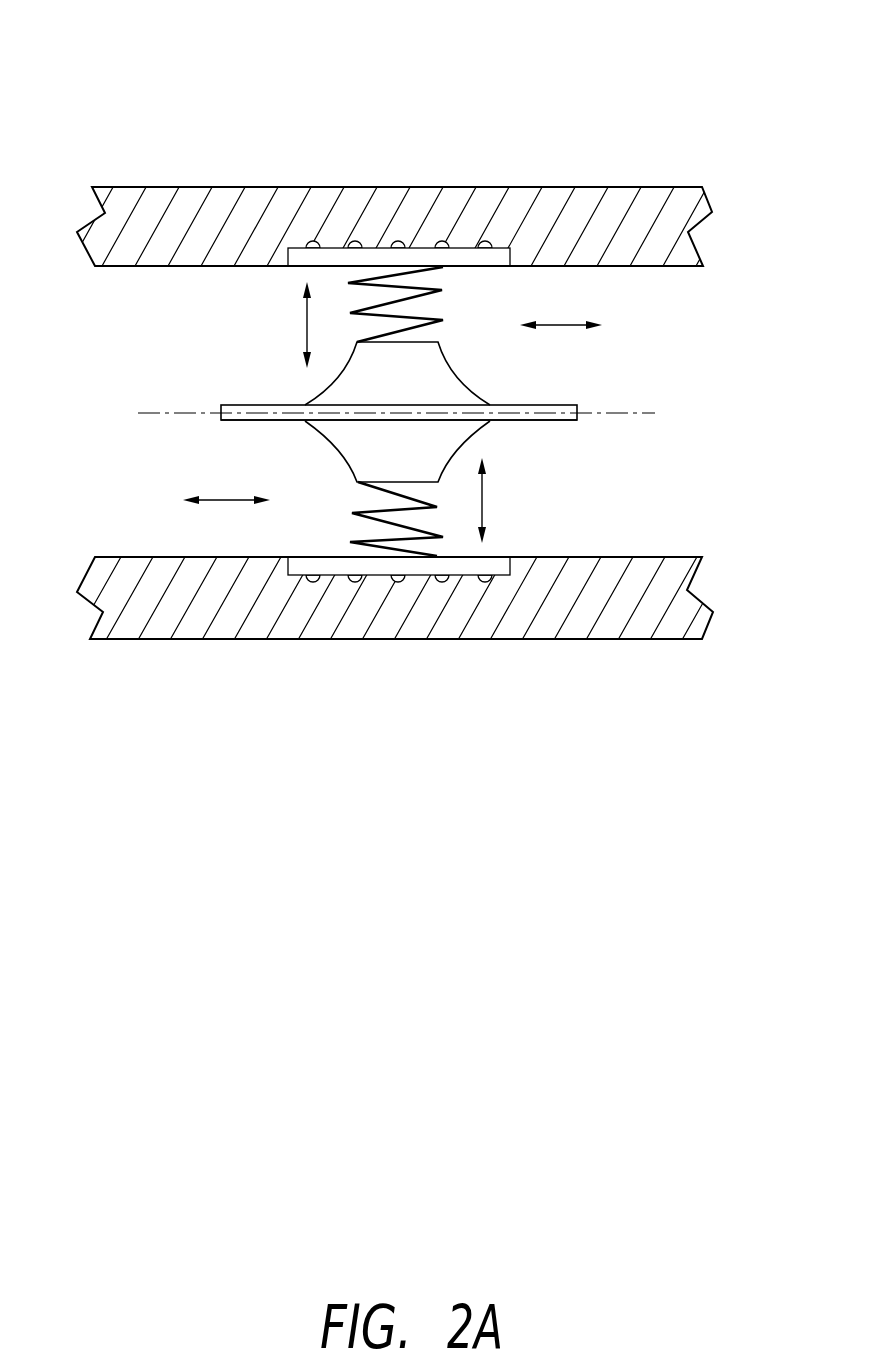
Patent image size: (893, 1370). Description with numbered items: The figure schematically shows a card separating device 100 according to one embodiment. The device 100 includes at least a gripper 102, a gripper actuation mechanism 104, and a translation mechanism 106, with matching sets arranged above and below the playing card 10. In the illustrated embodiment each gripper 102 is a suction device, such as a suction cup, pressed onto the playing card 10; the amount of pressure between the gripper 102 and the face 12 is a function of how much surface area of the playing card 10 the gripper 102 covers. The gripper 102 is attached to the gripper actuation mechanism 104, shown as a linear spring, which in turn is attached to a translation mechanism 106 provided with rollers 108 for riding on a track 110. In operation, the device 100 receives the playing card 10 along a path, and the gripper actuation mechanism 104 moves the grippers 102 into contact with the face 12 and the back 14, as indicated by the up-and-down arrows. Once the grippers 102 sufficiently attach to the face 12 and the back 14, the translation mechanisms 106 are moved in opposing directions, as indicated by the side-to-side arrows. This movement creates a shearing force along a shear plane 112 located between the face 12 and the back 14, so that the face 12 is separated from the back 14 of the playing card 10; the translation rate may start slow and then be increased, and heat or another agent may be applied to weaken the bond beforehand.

The separating device 100 is at (158, 80).
The track 110 is at (387, 191).
The rollers 108 is at (485, 243).
The translation mechanism 106 is at (378, 262).
The gripper actuation mechanism 104 is at (413, 300).
The gripper 102 is at (462, 378).
The face 12 is at (258, 405).
The back 14 is at (245, 422).
The shear plane 112 is at (607, 412).
The playing card 10 is at (508, 451).